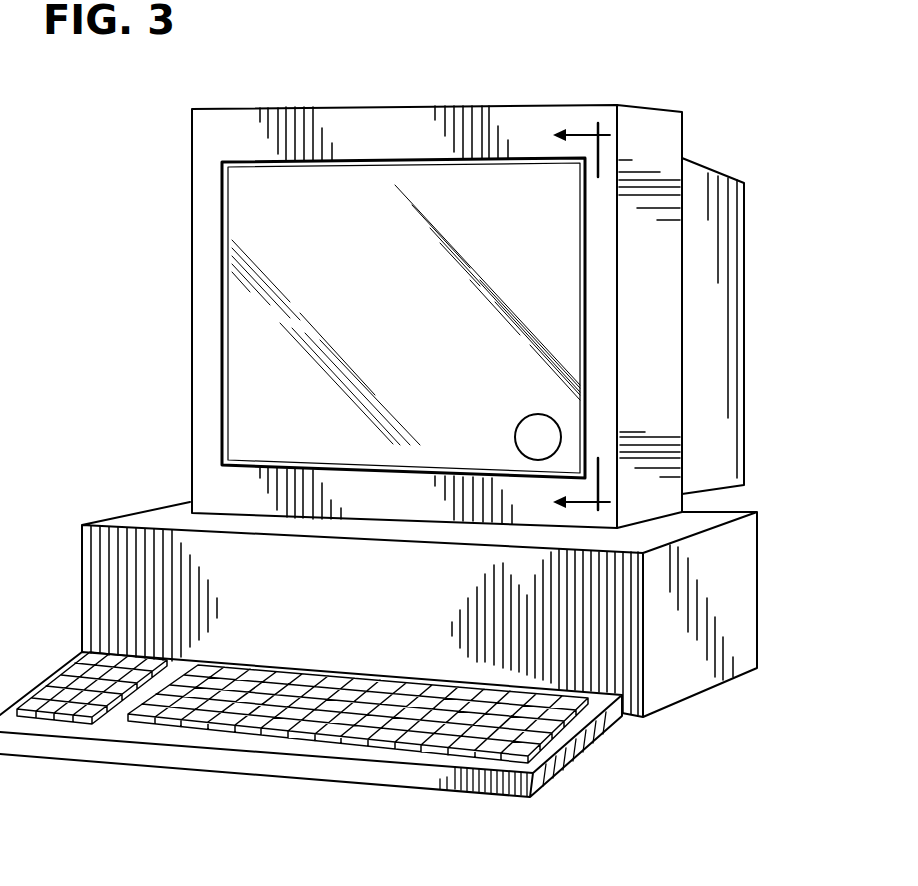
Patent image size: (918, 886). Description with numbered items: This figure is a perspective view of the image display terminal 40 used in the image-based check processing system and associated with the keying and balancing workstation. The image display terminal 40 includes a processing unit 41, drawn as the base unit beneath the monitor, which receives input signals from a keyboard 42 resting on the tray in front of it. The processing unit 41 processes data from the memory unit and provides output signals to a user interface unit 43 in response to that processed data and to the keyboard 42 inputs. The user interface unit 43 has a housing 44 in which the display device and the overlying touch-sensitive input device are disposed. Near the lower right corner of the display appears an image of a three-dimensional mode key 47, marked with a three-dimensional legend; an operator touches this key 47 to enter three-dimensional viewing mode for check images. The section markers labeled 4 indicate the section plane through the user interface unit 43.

The image display terminal 40 is at (551, 58).
The processing unit 41 is at (118, 508).
The keyboard 42 is at (533, 803).
The user interface unit 43 is at (186, 214).
The housing 44 is at (668, 132).
The three-dimensional mode key 47 is at (526, 416).
The section line 4- 4 is at (572, 319).